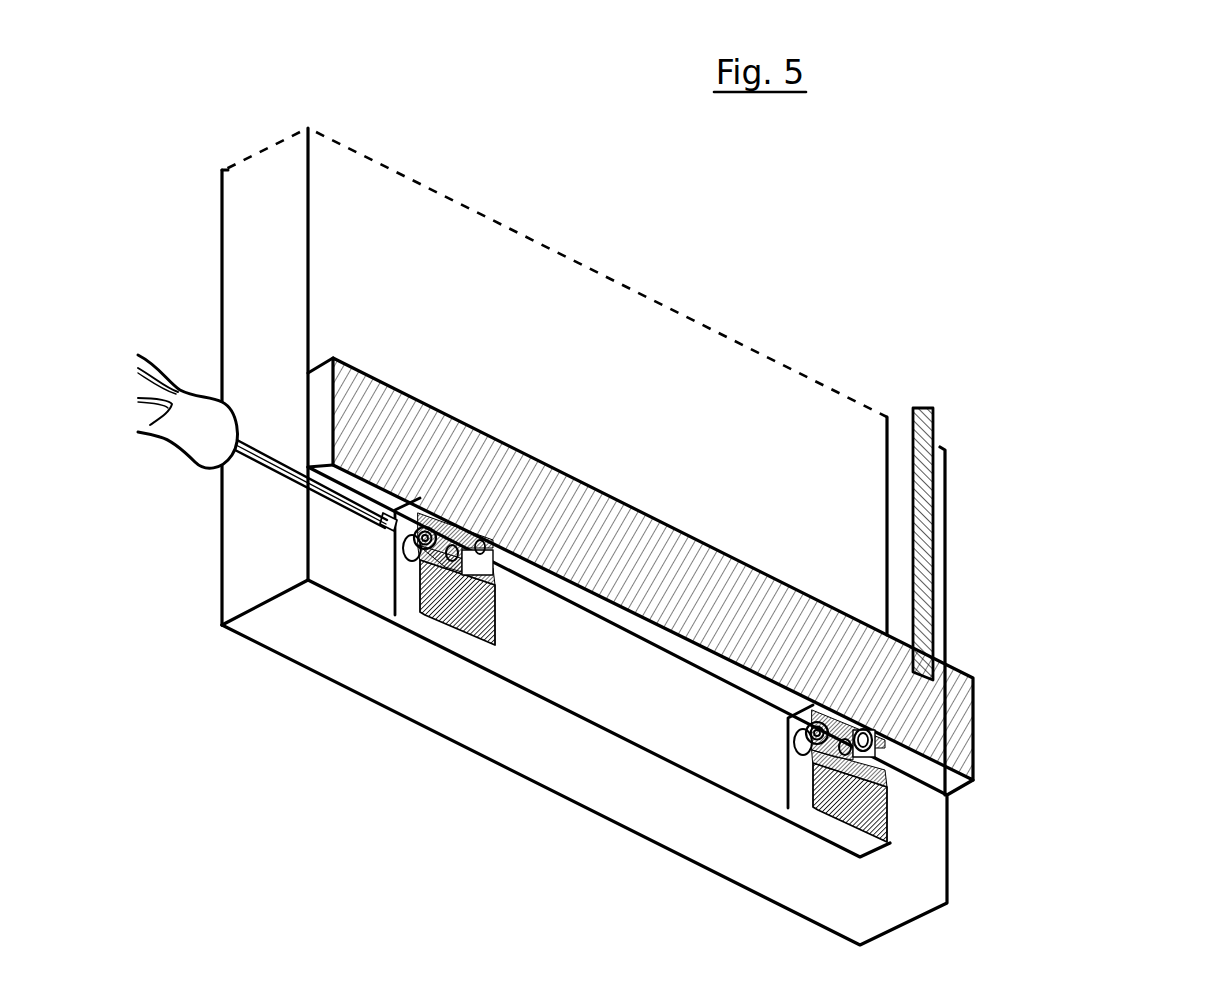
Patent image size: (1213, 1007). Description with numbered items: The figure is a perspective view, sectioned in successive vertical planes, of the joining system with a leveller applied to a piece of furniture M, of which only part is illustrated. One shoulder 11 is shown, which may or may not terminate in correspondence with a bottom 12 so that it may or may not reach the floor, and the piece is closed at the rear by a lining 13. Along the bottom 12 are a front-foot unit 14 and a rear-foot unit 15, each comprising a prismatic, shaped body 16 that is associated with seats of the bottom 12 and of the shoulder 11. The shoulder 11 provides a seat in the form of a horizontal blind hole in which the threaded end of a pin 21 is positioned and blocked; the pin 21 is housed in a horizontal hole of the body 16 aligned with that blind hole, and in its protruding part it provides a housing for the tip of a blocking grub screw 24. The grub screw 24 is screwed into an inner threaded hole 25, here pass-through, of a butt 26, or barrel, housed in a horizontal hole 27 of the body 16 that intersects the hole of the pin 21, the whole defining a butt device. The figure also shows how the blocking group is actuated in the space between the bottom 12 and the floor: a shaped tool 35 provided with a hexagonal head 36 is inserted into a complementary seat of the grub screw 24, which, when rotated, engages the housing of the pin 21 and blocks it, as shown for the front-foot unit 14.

The piece of furniture M is at (985, 295).
The shoulder 11 is at (285, 168).
The bottom 12 is at (681, 538).
The lining 13 is at (928, 545).
The front-foot unit 14 is at (507, 628).
The rear-foot unit 15 is at (908, 840).
The body 16 is at (392, 590).
The pin 21 is at (885, 745).
The blocking grub screw 24 is at (405, 549).
The inner threaded hole 25 is at (407, 543).
The butt 26 is at (402, 541).
The horizontal hole 27 is at (477, 543).
The shaped tool 35 is at (214, 442).
The hexagonal head 36 is at (398, 516).